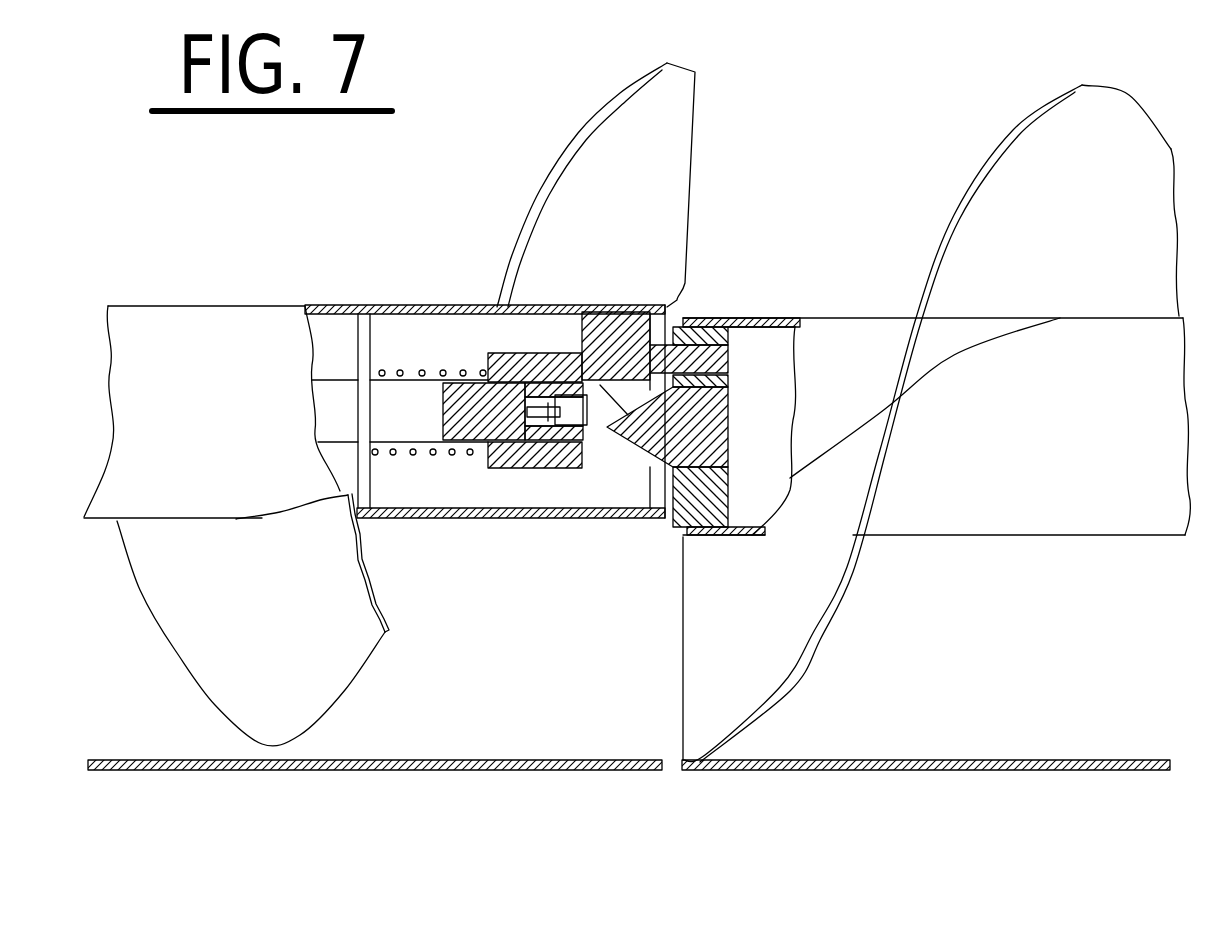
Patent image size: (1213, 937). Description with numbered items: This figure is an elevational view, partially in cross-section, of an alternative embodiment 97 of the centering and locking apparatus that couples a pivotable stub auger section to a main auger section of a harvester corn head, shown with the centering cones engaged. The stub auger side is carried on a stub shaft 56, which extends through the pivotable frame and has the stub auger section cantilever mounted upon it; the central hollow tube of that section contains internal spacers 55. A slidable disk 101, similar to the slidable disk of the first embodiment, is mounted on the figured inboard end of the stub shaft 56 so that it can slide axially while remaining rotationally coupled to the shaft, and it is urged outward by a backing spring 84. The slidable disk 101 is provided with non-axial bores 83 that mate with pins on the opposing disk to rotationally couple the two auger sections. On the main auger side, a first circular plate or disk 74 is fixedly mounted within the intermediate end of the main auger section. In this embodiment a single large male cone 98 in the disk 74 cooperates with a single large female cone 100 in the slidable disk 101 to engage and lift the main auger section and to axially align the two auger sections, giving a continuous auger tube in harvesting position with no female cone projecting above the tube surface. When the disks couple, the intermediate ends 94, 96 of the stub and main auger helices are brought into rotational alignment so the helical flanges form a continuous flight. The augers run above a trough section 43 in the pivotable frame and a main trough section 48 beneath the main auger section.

The trough section 43 is at (578, 770).
The main trough section 48 is at (890, 770).
The internal spacers 55 is at (362, 340).
The stub shaft 56 is at (407, 428).
The first circular plate or disk 74 is at (708, 537).
The non-axial bores 83 is at (577, 483).
The backing spring 84 is at (443, 368).
The intermediate end of the stub auger helix 94 is at (696, 113).
The intermediate end of the main auger helix 96 is at (683, 633).
The alternative embodiment of the coupling features 97 is at (850, 108).
The single large male cone 98 is at (580, 353).
The single large female cone 100 is at (672, 392).
The slidable disk 101 is at (610, 307).